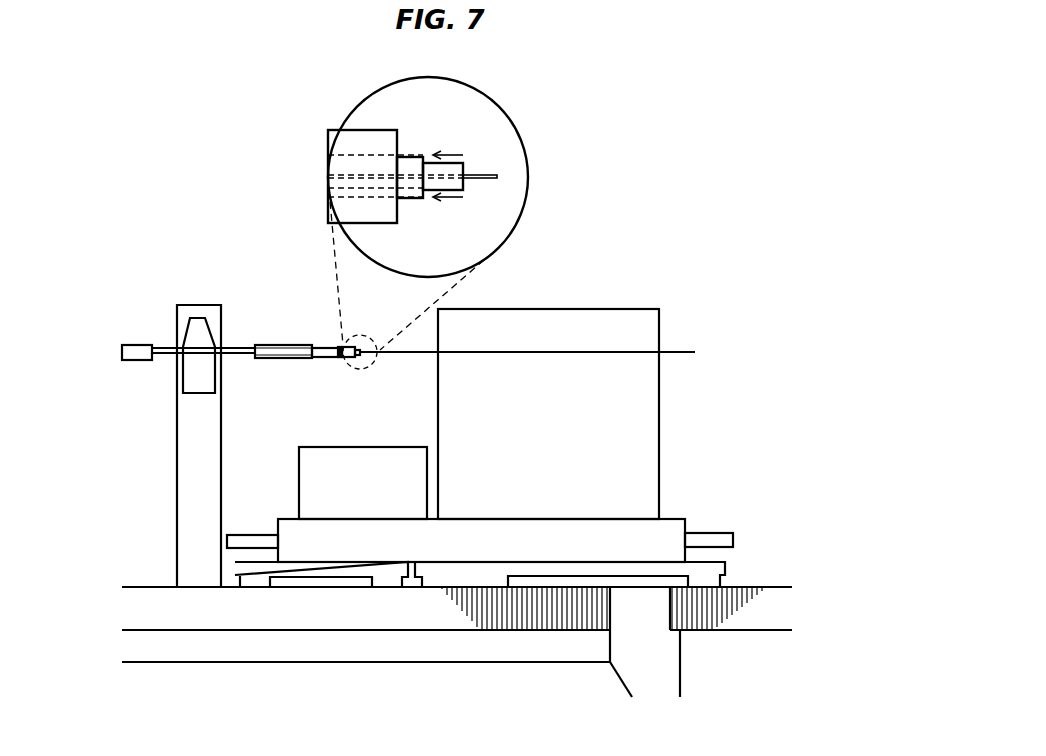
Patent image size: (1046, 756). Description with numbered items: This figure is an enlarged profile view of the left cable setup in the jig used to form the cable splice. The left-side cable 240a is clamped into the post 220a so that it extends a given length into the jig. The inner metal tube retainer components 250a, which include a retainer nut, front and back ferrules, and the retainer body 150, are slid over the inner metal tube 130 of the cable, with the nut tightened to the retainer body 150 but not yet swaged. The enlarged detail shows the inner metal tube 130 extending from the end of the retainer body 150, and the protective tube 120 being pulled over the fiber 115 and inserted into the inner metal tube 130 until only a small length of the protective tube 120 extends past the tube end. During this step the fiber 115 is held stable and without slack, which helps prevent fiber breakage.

The retainer body 150 is at (365, 130).
The inner metal tube 130 is at (408, 157).
The protective tube 120 is at (463, 167).
The fiber 115 is at (480, 175).
The post 220a is at (197, 348).
The inner metal tube retainer components 250a is at (294, 326).
The left-side cable 240a is at (238, 355).